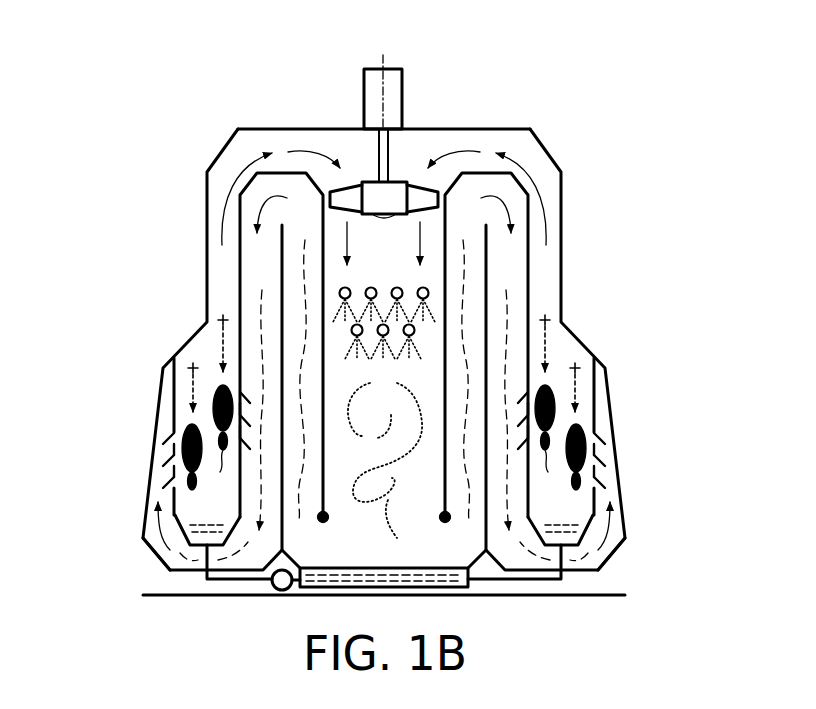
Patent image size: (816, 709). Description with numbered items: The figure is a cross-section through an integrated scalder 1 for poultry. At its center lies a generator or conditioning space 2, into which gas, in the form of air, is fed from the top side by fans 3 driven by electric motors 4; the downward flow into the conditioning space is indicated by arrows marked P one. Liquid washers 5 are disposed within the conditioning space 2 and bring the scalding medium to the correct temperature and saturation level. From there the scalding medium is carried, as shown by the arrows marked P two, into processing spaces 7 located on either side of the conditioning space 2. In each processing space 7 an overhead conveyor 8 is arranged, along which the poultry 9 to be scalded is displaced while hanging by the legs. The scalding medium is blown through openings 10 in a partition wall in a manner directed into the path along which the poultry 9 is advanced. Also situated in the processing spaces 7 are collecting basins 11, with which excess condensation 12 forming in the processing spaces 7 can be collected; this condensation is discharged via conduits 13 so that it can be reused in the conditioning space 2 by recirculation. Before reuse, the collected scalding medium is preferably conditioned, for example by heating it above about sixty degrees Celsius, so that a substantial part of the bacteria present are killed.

The integrated scalder 1 is at (148, 157).
The conditioning space 2 is at (391, 400).
The fan 3 is at (395, 191).
The electric motor 4 is at (364, 84).
The liquid washer 5 is at (383, 324).
The processing space 7 is at (205, 505).
The overhead conveyor 8 is at (221, 318).
The poultry 9 is at (197, 470).
The openings 10 is at (168, 468).
The collecting basin 11 is at (163, 555).
The excess condensation 12 is at (190, 528).
The conduit 13 is at (235, 583).